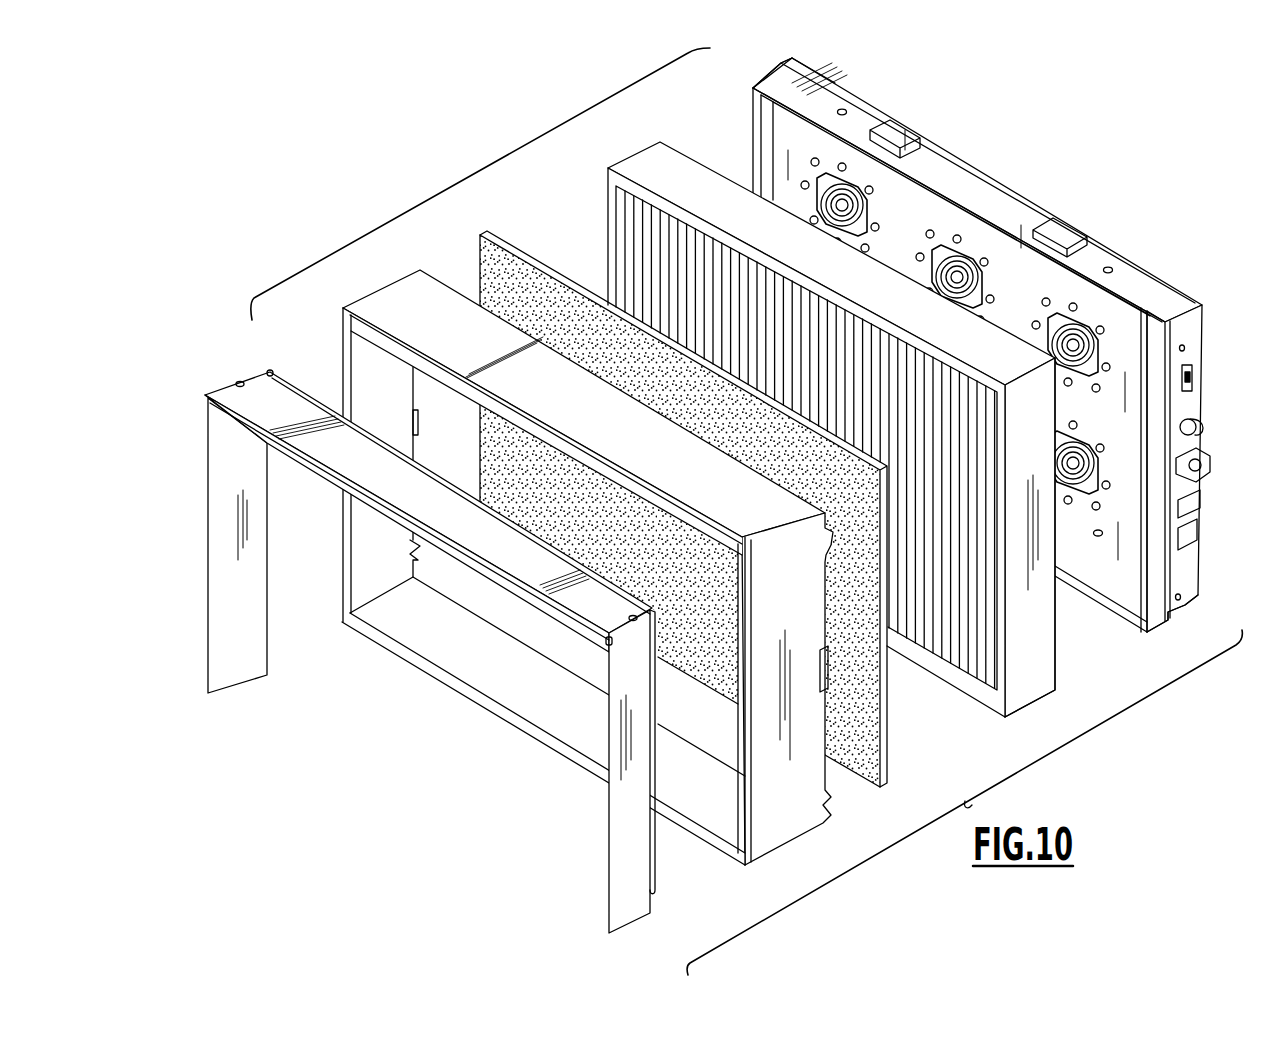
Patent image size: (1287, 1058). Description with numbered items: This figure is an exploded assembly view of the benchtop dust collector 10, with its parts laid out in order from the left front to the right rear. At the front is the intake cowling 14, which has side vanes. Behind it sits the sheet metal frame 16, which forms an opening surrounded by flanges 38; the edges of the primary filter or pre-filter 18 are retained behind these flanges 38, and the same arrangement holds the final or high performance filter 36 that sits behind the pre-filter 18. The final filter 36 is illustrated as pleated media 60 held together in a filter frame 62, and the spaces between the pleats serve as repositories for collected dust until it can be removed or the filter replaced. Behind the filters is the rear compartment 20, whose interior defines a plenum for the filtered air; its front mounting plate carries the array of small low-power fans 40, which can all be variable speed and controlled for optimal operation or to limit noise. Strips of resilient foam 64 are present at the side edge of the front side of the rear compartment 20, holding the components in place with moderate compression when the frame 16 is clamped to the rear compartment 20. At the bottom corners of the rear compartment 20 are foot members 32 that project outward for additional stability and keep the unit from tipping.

The benchtop dust collector 10 is at (472, 176).
The cowling 14 is at (207, 632).
The sheet metal frame 16 is at (793, 817).
The pre-filter 18 is at (857, 723).
The rear compartment 20 is at (1138, 283).
The foot member 32 is at (1186, 605).
The final filter 36 is at (1042, 641).
The flange 38 is at (449, 678).
The fan 40 is at (845, 205).
The pleated media 60 is at (648, 261).
The filter frame 62 is at (1020, 677).
The resilient foam strip 64 is at (790, 112).